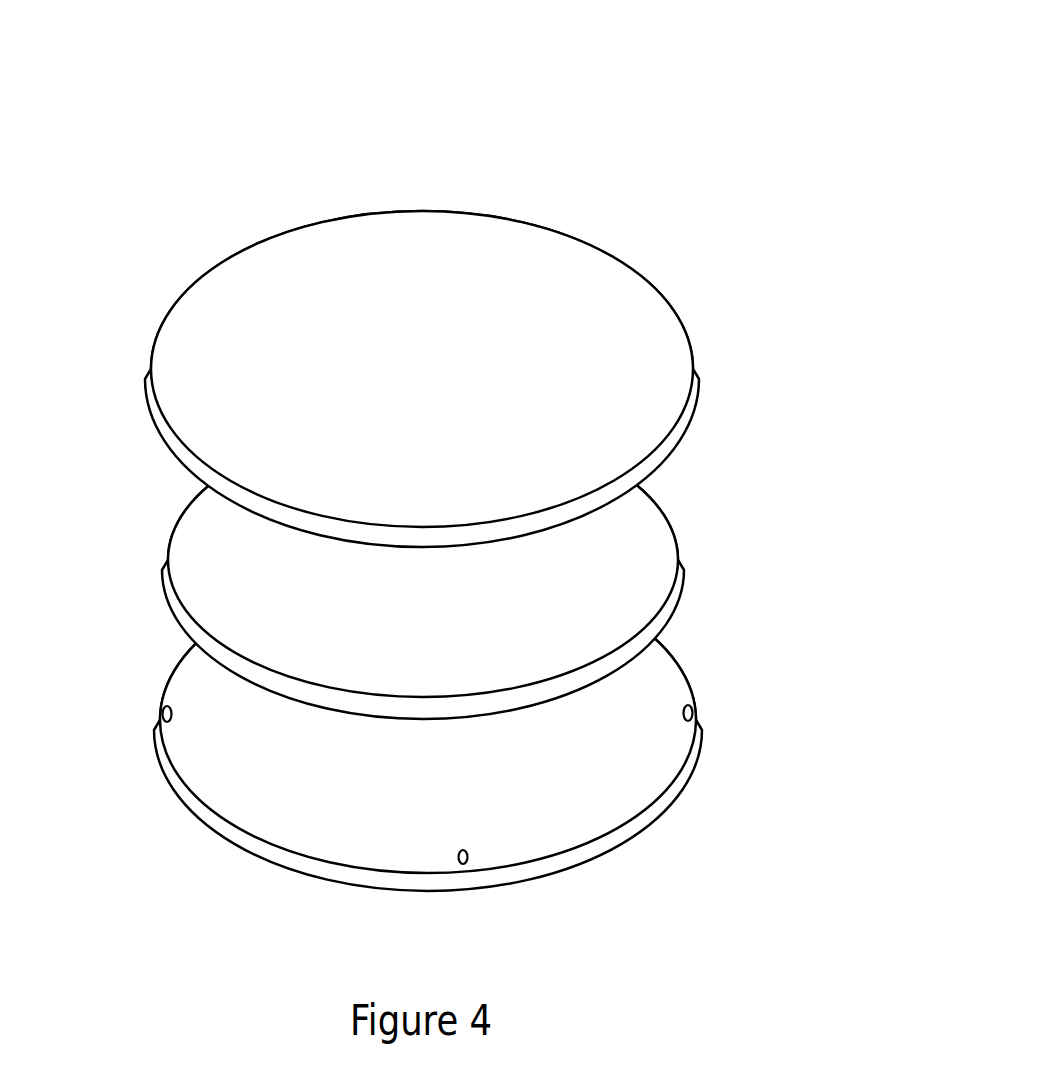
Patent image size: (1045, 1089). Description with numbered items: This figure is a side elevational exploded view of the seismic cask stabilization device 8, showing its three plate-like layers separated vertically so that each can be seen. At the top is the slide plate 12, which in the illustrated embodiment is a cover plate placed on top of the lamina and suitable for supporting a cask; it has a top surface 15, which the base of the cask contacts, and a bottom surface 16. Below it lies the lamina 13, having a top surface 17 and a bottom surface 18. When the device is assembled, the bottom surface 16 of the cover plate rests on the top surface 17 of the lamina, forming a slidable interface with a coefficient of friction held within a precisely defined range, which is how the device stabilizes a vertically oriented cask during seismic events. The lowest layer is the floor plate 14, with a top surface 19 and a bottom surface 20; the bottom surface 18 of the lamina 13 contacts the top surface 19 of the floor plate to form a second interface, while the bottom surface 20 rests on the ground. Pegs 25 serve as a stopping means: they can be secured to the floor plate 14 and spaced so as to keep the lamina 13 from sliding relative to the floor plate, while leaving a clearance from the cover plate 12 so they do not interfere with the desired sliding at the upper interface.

The seismic cask stabilization device 8 is at (457, 472).
The slide plate 12 is at (429, 379).
The lamina 13 is at (411, 571).
The floor plate 14 is at (449, 750).
The top surface of cover plate 15 is at (207, 330).
The bottom surface of cover plate 16 is at (163, 446).
The top surface of lamina 17 is at (224, 557).
The bottom surface of lamina 18 is at (220, 656).
The top surface of floor plate 19 is at (232, 788).
The bottom surface of floor plate 20 is at (295, 870).
The pegs 25 is at (160, 716).